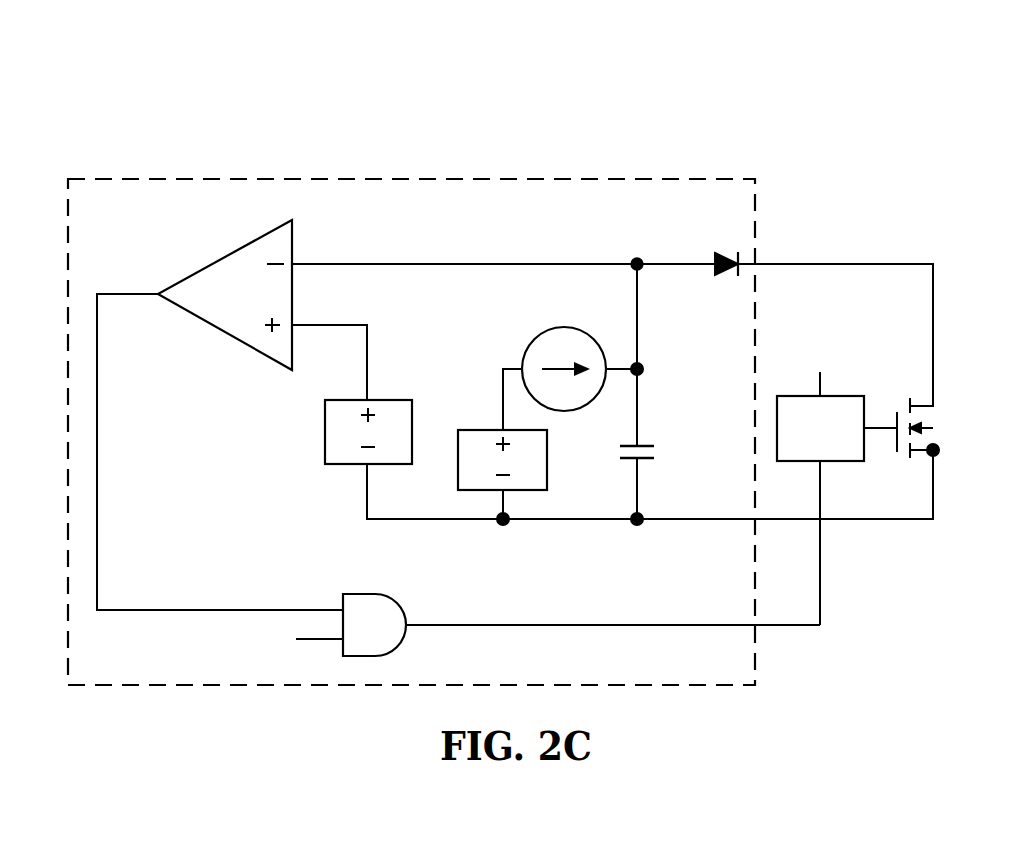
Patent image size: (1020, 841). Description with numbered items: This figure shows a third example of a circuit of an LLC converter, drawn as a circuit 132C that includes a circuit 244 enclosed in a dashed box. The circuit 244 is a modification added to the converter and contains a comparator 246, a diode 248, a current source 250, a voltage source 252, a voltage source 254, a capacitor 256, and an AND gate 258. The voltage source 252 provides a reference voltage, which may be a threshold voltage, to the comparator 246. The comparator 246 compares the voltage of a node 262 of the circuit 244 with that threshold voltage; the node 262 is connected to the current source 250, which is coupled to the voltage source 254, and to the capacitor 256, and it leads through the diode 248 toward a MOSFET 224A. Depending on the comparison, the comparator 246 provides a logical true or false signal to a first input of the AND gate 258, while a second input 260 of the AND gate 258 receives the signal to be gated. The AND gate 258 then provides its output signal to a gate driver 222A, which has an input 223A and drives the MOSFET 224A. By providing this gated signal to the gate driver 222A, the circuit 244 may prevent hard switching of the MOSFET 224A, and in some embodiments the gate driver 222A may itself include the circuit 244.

The circuit 132C is at (158, 99).
The circuit 244 is at (422, 179).
The comparator 246 is at (217, 262).
The diode 248 is at (728, 252).
The current source 250 is at (563, 327).
The voltage source 252 is at (325, 432).
The voltage source 254 is at (487, 430).
The capacitor 256 is at (645, 460).
The AND gate 258 is at (360, 594).
The second input 260 is at (323, 641).
The node 262 is at (640, 258).
The gate driver 222A is at (820, 428).
The input 223A is at (818, 383).
The MOSFET 224A is at (895, 410).